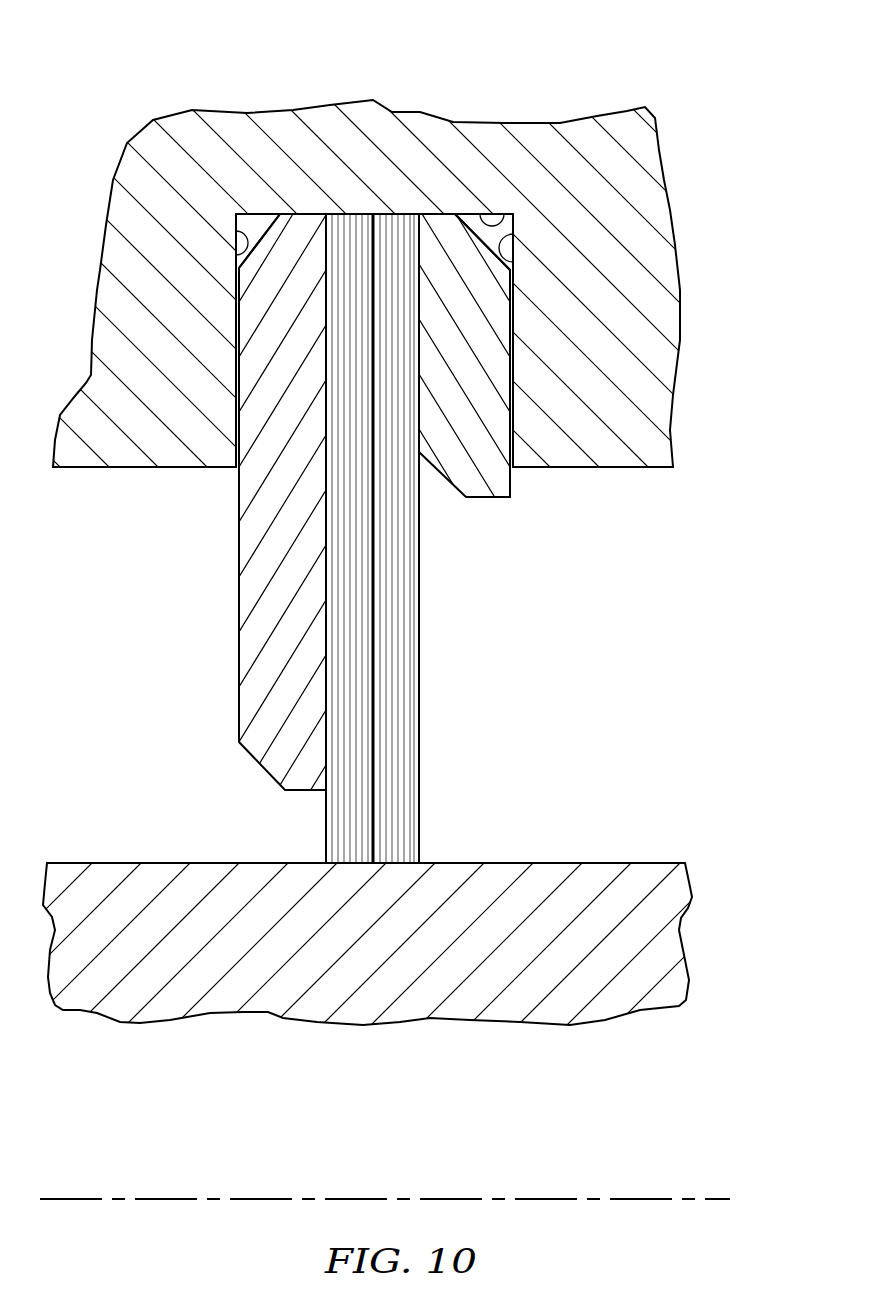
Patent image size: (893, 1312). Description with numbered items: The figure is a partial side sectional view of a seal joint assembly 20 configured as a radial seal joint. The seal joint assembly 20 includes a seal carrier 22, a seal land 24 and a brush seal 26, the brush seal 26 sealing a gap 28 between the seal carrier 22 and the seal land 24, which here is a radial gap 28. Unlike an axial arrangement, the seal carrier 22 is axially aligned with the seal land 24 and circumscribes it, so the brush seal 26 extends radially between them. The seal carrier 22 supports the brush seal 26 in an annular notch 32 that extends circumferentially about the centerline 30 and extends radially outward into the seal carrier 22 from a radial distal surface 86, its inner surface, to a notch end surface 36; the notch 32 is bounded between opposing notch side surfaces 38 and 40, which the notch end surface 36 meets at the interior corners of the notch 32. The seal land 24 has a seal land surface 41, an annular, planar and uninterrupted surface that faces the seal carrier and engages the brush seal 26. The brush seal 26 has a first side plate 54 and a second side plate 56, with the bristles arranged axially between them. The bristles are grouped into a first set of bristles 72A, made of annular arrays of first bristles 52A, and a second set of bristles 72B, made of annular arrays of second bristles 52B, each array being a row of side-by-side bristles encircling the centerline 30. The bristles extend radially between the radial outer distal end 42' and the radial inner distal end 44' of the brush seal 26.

The seal joint assembly 20 is at (691, 75).
The seal carrier 22 is at (653, 194).
The seal land 24 is at (687, 918).
The brush seal 26 is at (338, 526).
The gap 28 is at (602, 655).
The centerline 30 is at (712, 1198).
The annular notch 32 is at (260, 222).
The notch end surface 36 is at (497, 215).
The notch side surface 38 is at (233, 253).
The notch side surface 40 is at (513, 262).
The seal land surface 41 is at (622, 863).
The radial first distal end 42' is at (382, 537).
The radial second distal end 44' is at (372, 908).
The first bristles 52A is at (400, 712).
The second bristles 52B is at (333, 832).
The first side plate 54 is at (210, 571).
The second side plate 56 is at (493, 508).
The first set of bristles 72A is at (440, 812).
The second set of bristles 72B is at (312, 848).
The radial distal surface 86 is at (624, 468).